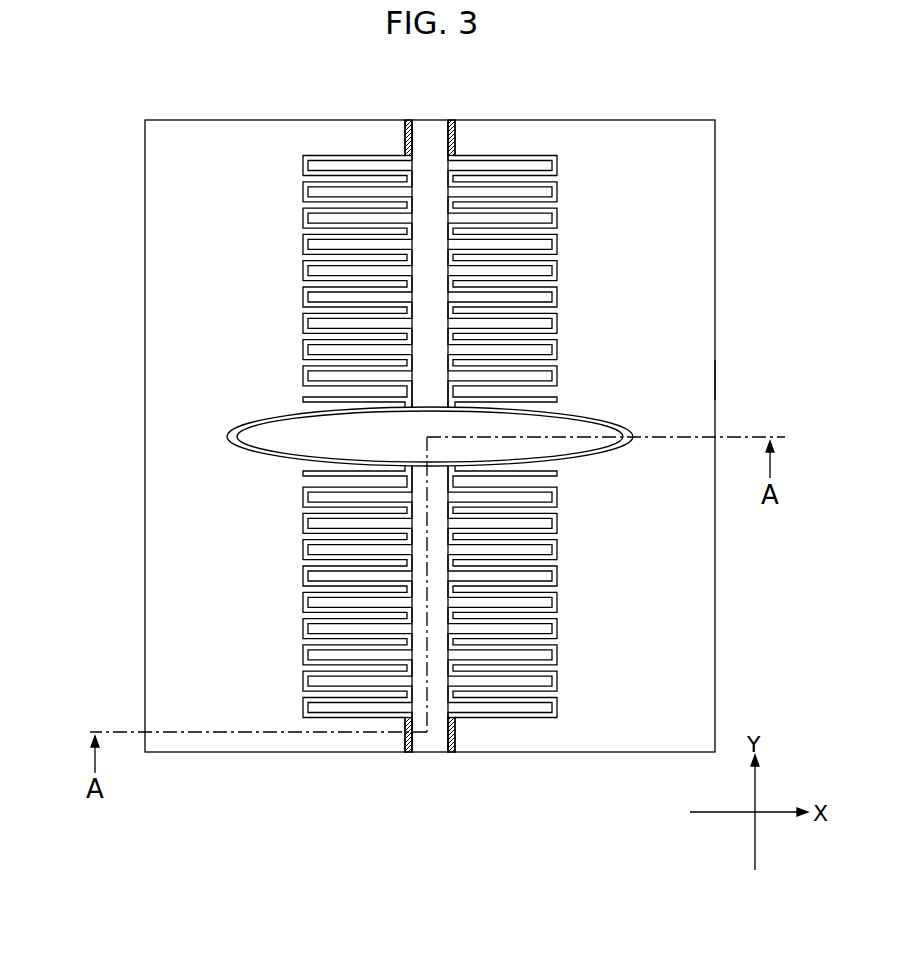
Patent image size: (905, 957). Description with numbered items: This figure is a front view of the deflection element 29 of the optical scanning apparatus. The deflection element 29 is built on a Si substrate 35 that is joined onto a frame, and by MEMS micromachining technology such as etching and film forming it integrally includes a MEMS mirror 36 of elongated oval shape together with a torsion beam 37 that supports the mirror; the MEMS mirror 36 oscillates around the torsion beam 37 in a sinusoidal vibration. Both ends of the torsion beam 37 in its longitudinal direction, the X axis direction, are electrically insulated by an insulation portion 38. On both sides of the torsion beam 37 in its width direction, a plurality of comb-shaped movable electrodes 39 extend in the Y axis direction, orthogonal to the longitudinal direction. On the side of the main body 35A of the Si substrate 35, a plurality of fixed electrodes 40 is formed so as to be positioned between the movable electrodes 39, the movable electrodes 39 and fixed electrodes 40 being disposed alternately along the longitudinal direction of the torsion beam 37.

The deflection element 29 is at (733, 205).
The Si substrate 35 is at (688, 305).
The main body 35A is at (703, 378).
The MEMS mirror 36 is at (556, 430).
The torsion beam 37 is at (430, 338).
The insulation portion 38 is at (455, 137).
The movable electrodes 39 is at (548, 172).
The fixed electrodes 40 is at (383, 283).